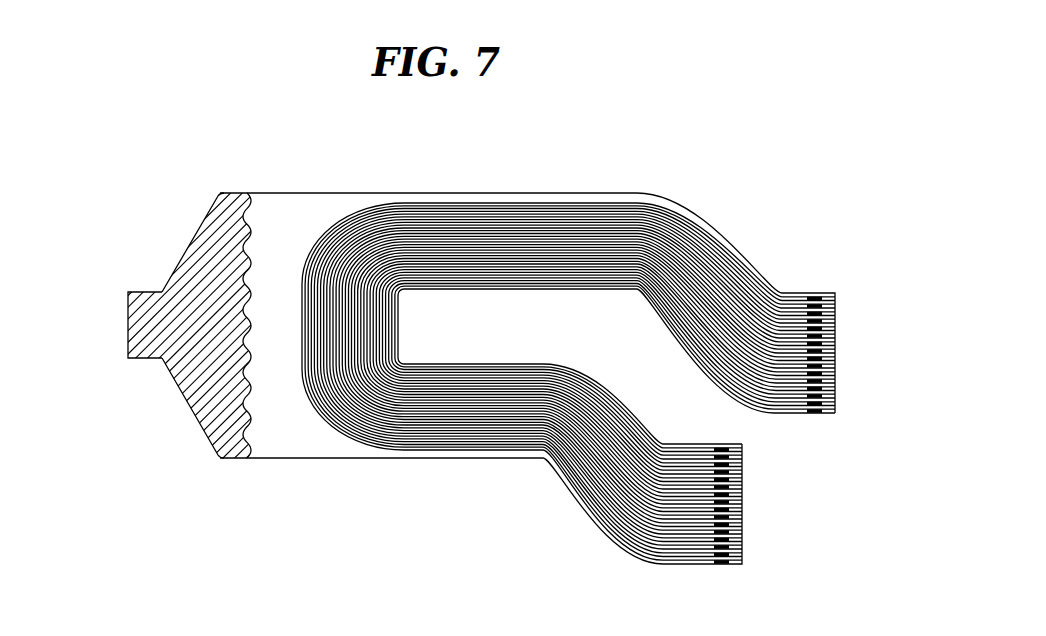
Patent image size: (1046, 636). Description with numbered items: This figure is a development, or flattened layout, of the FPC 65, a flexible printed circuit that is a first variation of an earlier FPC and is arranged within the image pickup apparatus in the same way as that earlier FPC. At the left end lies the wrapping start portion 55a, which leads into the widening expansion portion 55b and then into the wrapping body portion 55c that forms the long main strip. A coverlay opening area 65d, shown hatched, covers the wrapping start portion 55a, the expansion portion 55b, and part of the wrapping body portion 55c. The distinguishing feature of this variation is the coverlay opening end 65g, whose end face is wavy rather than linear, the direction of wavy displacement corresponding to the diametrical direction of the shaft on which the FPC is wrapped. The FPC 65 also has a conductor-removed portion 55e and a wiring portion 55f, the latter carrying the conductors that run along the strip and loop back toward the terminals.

The FPC 65 is at (768, 169).
The coverlay opening area 65d is at (202, 397).
The coverlay opening end 65g is at (245, 219).
The wrapping start portion 55a is at (128, 308).
The expansion portion 55b is at (179, 263).
The wrapping body portion 55c is at (297, 191).
The conductor-removed portion 55e is at (267, 443).
The wiring portion 55f is at (342, 443).